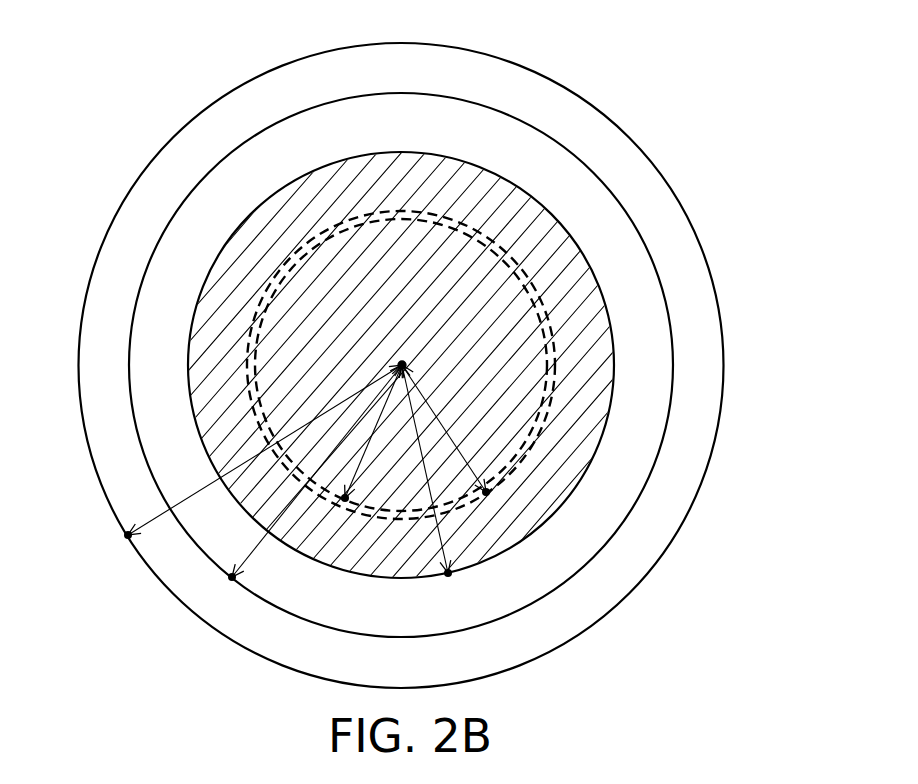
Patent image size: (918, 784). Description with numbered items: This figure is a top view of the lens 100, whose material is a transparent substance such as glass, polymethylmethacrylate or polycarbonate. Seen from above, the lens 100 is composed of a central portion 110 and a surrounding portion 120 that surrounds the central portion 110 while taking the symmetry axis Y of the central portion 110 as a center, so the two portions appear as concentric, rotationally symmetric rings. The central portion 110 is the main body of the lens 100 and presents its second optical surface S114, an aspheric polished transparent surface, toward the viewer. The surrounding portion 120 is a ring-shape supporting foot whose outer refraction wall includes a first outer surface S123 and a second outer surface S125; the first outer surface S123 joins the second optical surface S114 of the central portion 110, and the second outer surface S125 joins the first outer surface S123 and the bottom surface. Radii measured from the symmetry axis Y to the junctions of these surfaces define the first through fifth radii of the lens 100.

The lens 100 is at (825, 675).
The central portion 110 is at (432, 331).
The surrounding portion 120 is at (436, 361).
The second optical surface S114 is at (237, 282).
The first outer surface S123 is at (507, 143).
The second outer surface S125 is at (602, 152).